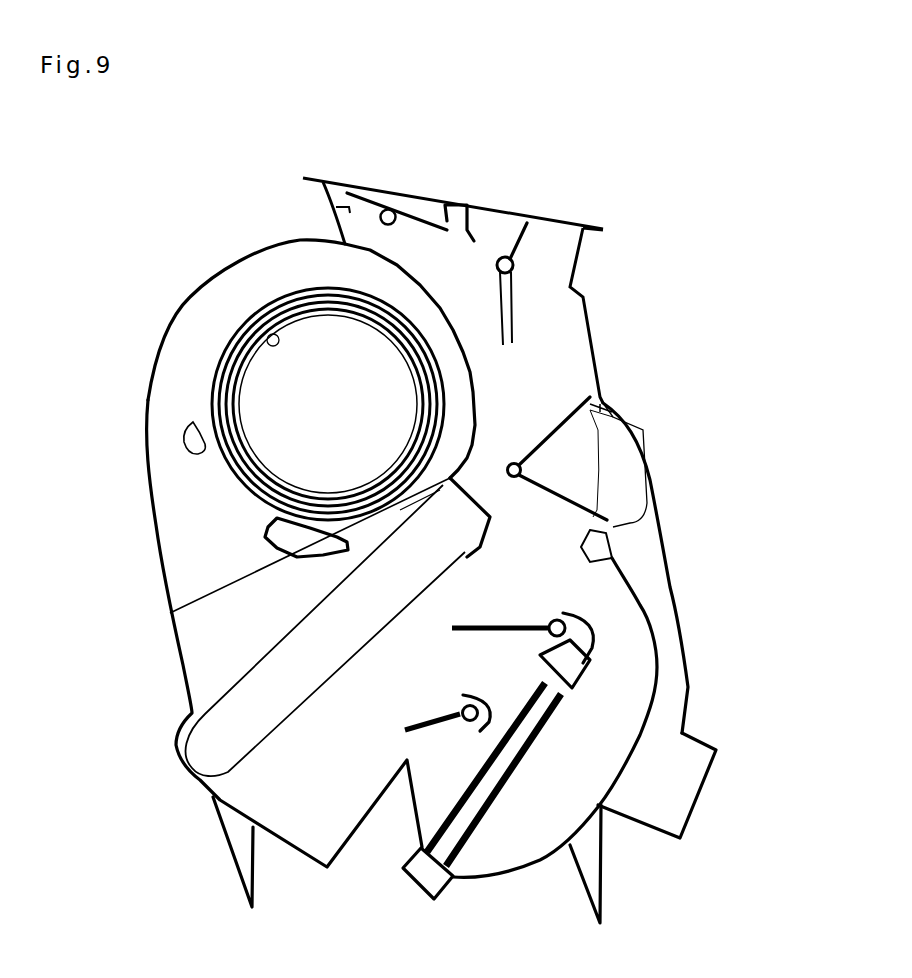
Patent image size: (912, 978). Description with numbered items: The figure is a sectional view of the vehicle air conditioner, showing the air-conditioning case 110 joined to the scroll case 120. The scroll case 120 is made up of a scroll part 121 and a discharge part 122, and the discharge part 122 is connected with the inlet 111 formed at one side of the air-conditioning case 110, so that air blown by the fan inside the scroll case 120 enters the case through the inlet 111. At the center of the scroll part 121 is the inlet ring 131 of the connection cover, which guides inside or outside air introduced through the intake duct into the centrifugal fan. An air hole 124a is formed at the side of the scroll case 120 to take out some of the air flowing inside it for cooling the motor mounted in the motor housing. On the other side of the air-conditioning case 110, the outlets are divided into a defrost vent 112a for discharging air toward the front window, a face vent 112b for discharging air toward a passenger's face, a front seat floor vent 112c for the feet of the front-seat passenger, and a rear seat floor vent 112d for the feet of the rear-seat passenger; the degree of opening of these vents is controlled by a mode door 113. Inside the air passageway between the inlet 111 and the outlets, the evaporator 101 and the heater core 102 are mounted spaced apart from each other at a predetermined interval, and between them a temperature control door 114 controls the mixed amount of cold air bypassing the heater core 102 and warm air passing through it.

The evaporator 101 is at (200, 758).
The heater core 102 is at (435, 877).
The air-conditioning case 110 is at (670, 555).
The inlet 111 is at (220, 610).
The defrost vent 112a is at (375, 192).
The face vent 112b is at (547, 235).
The front seat floor vent 112c is at (627, 470).
The rear seat floor vent 112d is at (687, 787).
The mode door 113 is at (520, 228).
The temperature control door 114 is at (493, 680).
The scroll case 120 is at (70, 328).
The scroll part 121 is at (170, 323).
The discharge part 122 is at (143, 443).
The air hole 124a is at (193, 455).
The inlet ring 131 is at (262, 307).